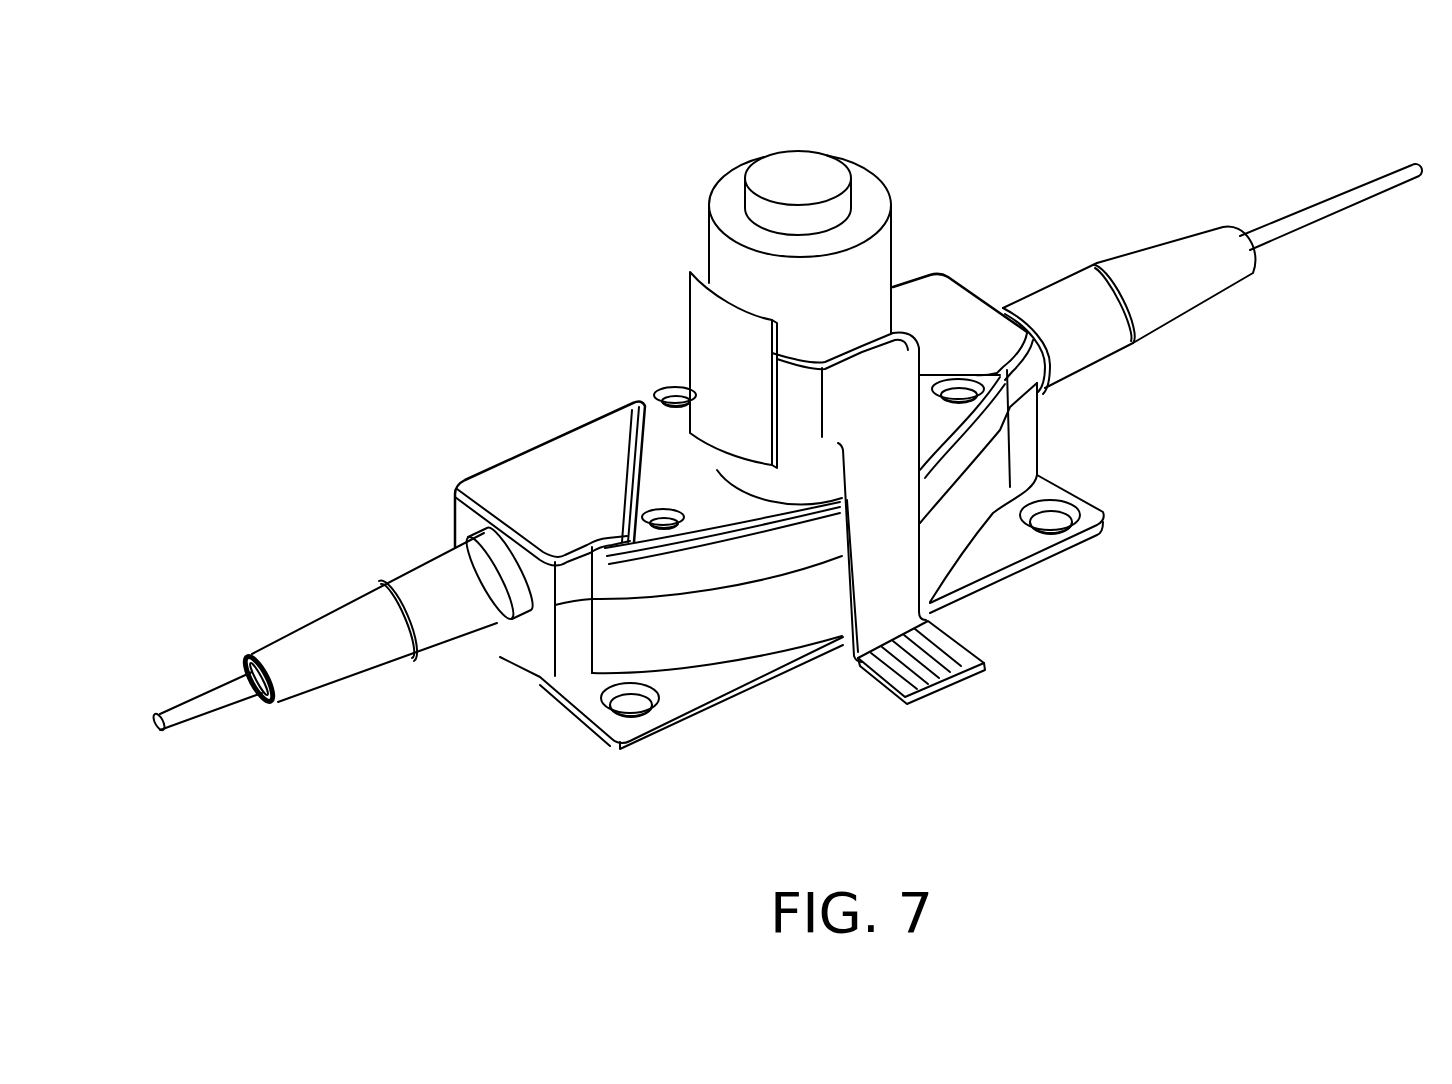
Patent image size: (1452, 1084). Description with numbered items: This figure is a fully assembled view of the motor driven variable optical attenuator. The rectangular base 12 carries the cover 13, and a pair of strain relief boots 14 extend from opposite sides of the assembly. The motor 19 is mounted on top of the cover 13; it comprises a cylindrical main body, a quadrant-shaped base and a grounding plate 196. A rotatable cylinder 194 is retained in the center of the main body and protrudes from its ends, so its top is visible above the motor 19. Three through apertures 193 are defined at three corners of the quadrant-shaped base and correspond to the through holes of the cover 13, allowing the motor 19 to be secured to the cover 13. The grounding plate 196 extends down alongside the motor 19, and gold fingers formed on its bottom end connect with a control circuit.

The rectangular base 12 is at (780, 683).
The cover 13 is at (548, 432).
The strain relief boots 14 is at (352, 578).
The motor 19 is at (700, 247).
The through apertures 193 is at (676, 405).
The rotatable cylinder 194 is at (795, 178).
The grounding plate 196 is at (890, 573).